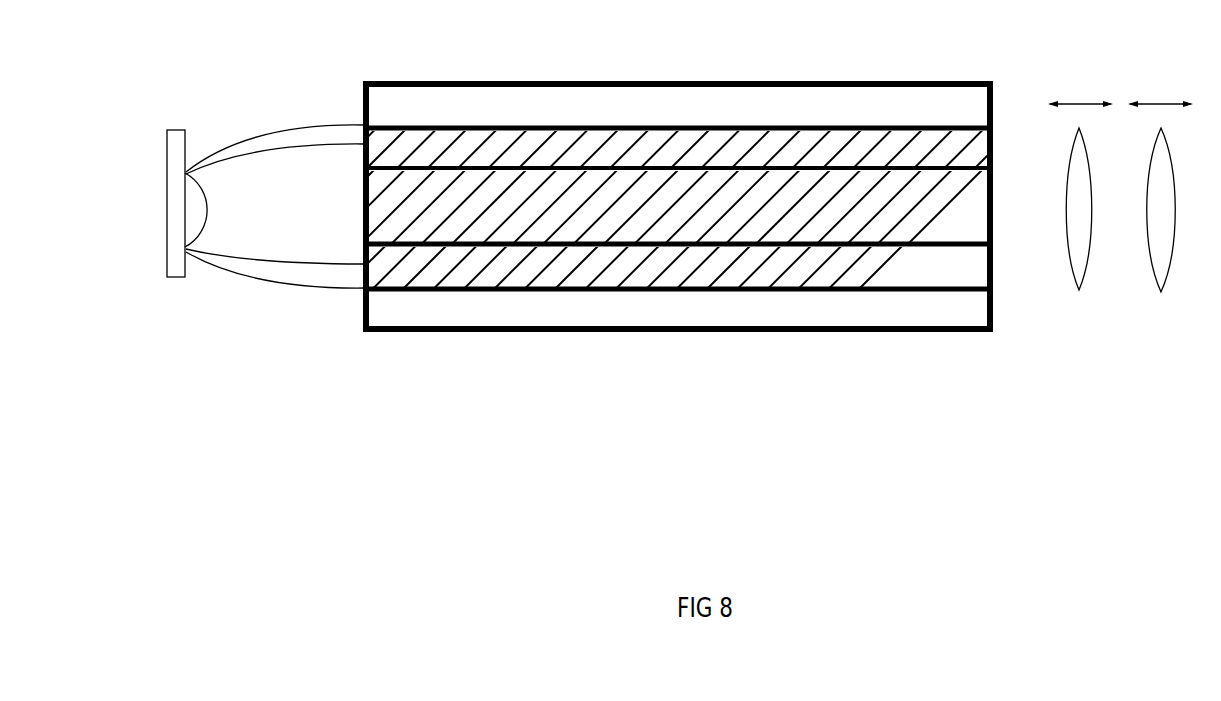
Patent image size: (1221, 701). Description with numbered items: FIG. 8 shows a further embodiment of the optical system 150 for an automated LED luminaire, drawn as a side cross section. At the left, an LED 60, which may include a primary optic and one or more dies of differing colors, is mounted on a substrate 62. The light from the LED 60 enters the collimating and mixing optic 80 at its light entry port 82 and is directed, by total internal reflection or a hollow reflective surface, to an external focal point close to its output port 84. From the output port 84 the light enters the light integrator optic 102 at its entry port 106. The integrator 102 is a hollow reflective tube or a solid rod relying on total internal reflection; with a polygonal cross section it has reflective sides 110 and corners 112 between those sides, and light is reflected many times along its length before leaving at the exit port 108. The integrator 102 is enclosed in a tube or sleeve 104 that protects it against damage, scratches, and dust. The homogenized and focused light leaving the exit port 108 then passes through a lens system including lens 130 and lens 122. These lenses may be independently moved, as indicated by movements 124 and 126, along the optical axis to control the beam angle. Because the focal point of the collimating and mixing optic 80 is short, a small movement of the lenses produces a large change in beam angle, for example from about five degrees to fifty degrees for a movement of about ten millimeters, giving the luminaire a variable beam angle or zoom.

The LED 60 is at (193, 205).
The substrate 62 is at (178, 130).
The collimating and mixing optic 80 is at (274, 215).
The light entry port 82 is at (187, 173).
The output port 84 is at (353, 252).
The light integrator optic 102 is at (608, 187).
The tube or sleeve 104 is at (696, 103).
The entry port 106 is at (375, 207).
The exit port 108 is at (998, 136).
The reflective sides 110 is at (918, 125).
The corners 112 is at (830, 162).
The lens 122 is at (1162, 288).
The movement 124 is at (1083, 100).
The movement 126 is at (1168, 100).
The first lens 130 is at (1080, 286).
The optical assembly 150 is at (803, 360).